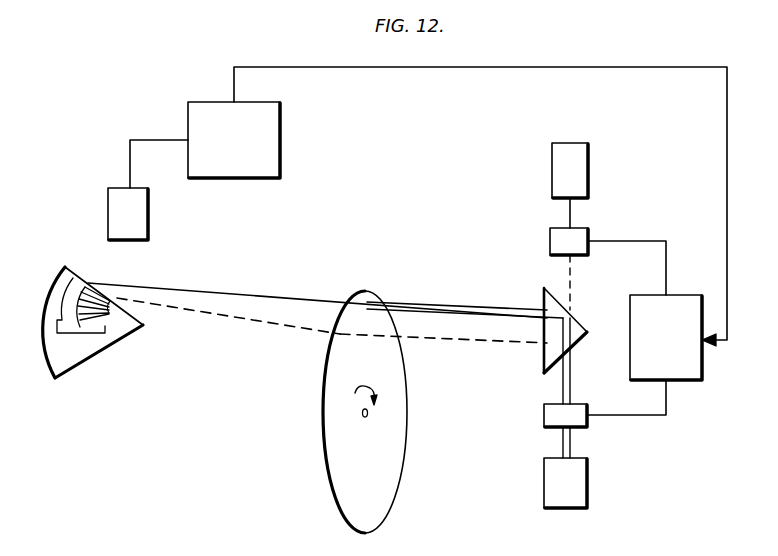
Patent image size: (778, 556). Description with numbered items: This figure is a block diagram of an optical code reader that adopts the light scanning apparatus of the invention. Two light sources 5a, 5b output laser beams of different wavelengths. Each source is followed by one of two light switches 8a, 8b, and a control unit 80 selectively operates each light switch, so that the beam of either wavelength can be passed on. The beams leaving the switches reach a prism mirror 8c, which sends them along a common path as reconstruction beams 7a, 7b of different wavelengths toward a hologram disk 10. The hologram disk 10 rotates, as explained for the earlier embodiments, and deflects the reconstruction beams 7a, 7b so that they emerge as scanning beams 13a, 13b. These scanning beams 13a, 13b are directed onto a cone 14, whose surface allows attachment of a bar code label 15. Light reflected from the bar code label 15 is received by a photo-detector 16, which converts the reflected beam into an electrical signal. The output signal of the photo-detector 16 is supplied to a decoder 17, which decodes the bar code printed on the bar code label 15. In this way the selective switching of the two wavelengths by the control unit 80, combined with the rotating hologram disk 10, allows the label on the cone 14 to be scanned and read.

The light source 5a is at (588, 172).
The light source 5b is at (587, 488).
The reconstruction beam 7a is at (440, 340).
The reconstruction beam 7b is at (437, 303).
The light switch 8a is at (589, 230).
The light switch 8b is at (583, 428).
The prism mirror 8c is at (585, 302).
The hologram disk 10 is at (395, 474).
The scanning beam 13a is at (242, 322).
The scanning beam 13b is at (245, 294).
The cone 14 is at (48, 291).
The bar code label 15 is at (77, 282).
The photo-detector 16 is at (147, 223).
The decoder 17 is at (278, 152).
The control unit 80 is at (698, 368).